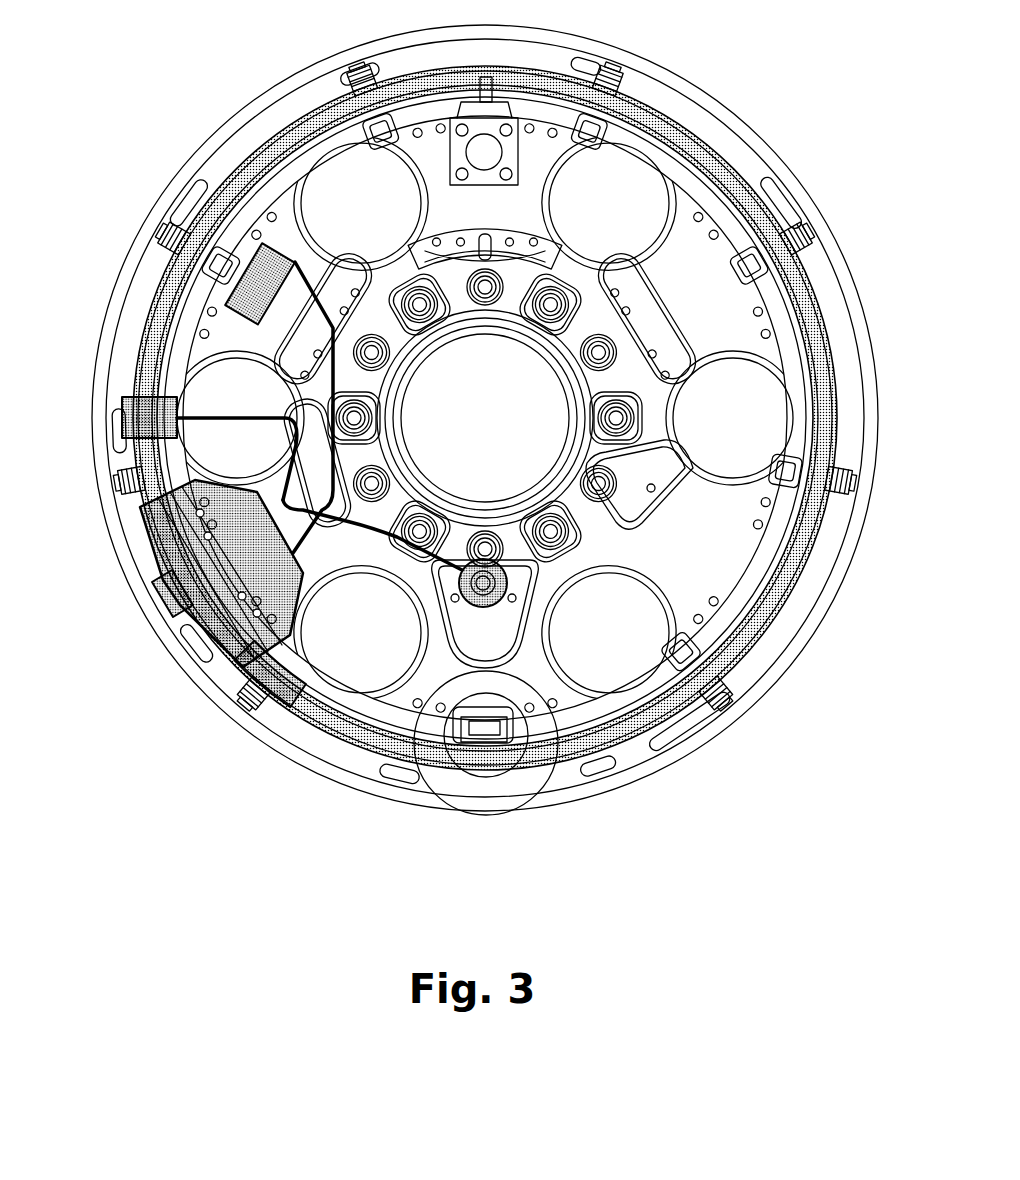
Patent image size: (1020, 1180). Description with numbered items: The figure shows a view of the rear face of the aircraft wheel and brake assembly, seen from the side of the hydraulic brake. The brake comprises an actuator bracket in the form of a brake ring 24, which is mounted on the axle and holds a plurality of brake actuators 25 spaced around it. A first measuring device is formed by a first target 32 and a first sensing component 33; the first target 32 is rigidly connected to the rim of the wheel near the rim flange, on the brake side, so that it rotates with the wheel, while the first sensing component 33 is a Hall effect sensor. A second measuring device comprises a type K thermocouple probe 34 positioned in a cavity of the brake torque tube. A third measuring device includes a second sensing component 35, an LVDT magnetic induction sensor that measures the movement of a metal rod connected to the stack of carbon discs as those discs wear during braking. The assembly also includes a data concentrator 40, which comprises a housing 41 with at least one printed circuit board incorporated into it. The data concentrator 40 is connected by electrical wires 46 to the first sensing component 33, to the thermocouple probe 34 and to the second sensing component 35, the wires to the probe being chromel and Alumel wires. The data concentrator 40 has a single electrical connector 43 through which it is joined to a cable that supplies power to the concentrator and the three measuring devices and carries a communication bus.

The brake ring 24 is at (597, 318).
The brake actuators 25 is at (632, 178).
The first target 32 is at (301, 112).
The first sensing component 33 is at (135, 400).
The thermocouple probe 34 is at (505, 597).
The second sensing component 35 is at (238, 250).
The data concentrator 40 is at (212, 648).
The housing 41 is at (262, 690).
The electrical connector 43 is at (152, 600).
The electrical wires 46 is at (262, 266).